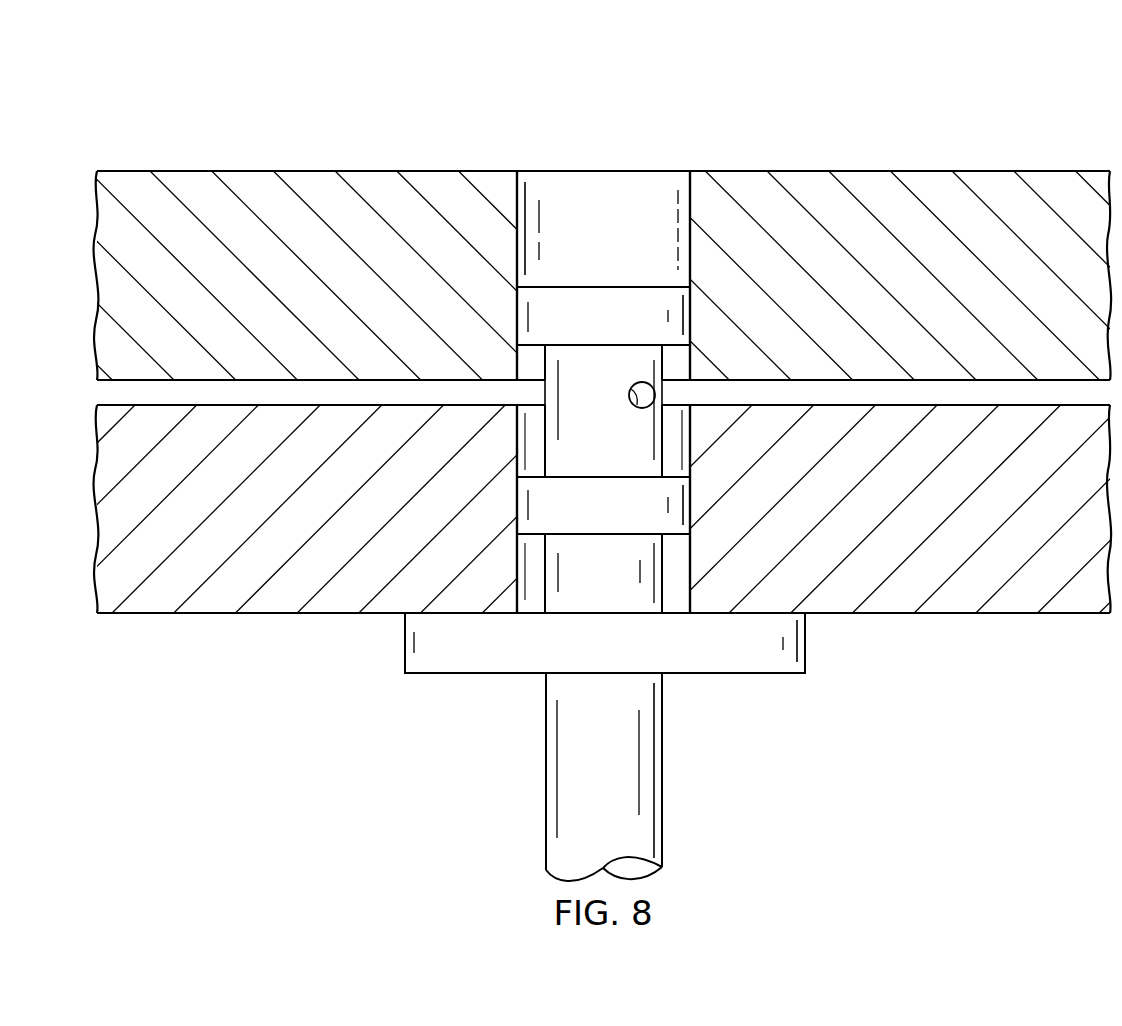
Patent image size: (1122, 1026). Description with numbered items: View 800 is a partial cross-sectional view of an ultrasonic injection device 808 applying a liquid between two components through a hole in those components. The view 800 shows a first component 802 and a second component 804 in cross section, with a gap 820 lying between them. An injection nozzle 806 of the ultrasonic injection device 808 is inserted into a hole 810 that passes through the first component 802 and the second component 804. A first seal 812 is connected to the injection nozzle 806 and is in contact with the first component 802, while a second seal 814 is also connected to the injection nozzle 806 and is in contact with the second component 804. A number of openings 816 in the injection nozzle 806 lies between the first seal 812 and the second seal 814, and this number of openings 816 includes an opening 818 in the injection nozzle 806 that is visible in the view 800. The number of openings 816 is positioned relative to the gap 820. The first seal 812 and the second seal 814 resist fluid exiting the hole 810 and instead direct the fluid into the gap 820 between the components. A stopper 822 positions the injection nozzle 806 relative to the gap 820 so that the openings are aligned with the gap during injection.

The view 800 is at (388, 77).
The first component 802 is at (931, 178).
The second component 804 is at (952, 603).
The injection nozzle 806 is at (546, 757).
The ultrasonic injection device 808 is at (690, 751).
The hole 810 is at (626, 194).
The first seal 812 is at (592, 286).
The second seal 814 is at (612, 535).
The number of openings 816 is at (618, 379).
The opening 818 is at (638, 408).
The gap 820 is at (119, 394).
The stopper 822 is at (403, 640).